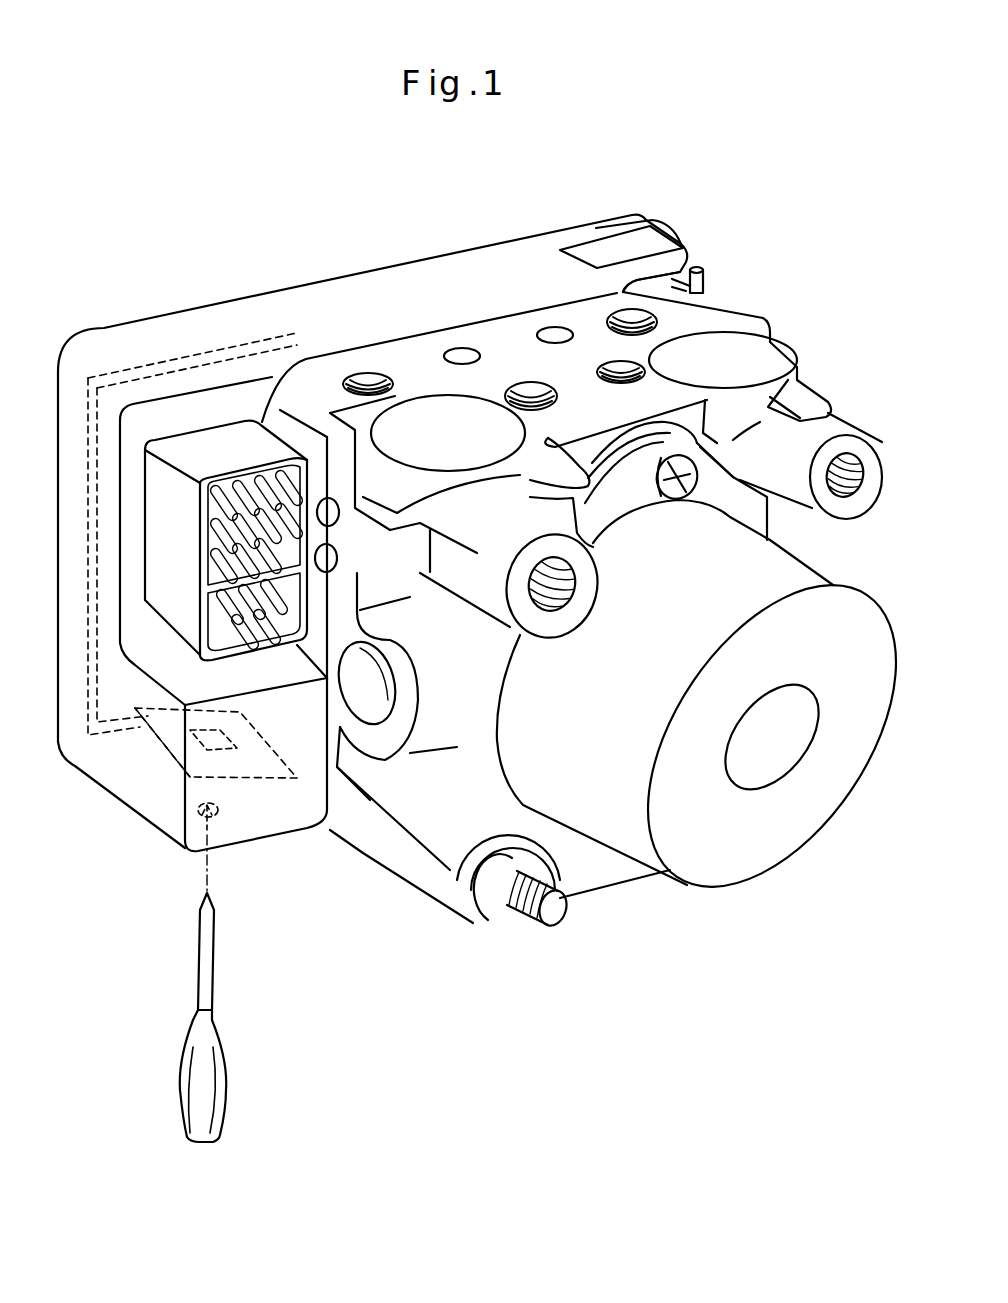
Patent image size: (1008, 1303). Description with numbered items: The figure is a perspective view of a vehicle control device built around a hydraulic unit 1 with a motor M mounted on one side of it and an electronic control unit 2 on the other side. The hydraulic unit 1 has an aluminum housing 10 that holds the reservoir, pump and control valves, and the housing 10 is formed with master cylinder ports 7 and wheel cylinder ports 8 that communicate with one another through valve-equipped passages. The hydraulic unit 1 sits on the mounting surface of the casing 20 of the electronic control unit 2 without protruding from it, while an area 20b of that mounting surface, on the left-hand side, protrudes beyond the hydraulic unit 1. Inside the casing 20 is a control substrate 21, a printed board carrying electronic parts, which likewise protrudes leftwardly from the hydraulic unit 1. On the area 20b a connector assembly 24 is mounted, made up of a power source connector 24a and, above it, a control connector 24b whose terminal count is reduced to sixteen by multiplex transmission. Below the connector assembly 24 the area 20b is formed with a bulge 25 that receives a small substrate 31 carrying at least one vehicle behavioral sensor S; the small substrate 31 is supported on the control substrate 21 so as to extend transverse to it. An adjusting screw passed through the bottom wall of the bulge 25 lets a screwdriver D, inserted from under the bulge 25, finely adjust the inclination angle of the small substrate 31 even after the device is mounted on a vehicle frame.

The hydraulic unit 1 is at (773, 330).
The electronic control unit 2 is at (510, 238).
The master cylinder ports 7 is at (855, 455).
The wheel cylinder ports 8 is at (367, 380).
The housing 10 is at (447, 838).
The casing 20 is at (345, 312).
The area of the mounting surface 20b is at (133, 573).
The control substrate 21 is at (228, 350).
The connector assembly 24 is at (190, 438).
The power source connector 24a is at (217, 633).
The control connector 24b is at (243, 483).
The bulge 25 is at (285, 798).
The small substrate 31 is at (245, 757).
The vehicle behavioral sensor S is at (150, 830).
The motor M is at (660, 650).
The screwdriver D is at (200, 1097).